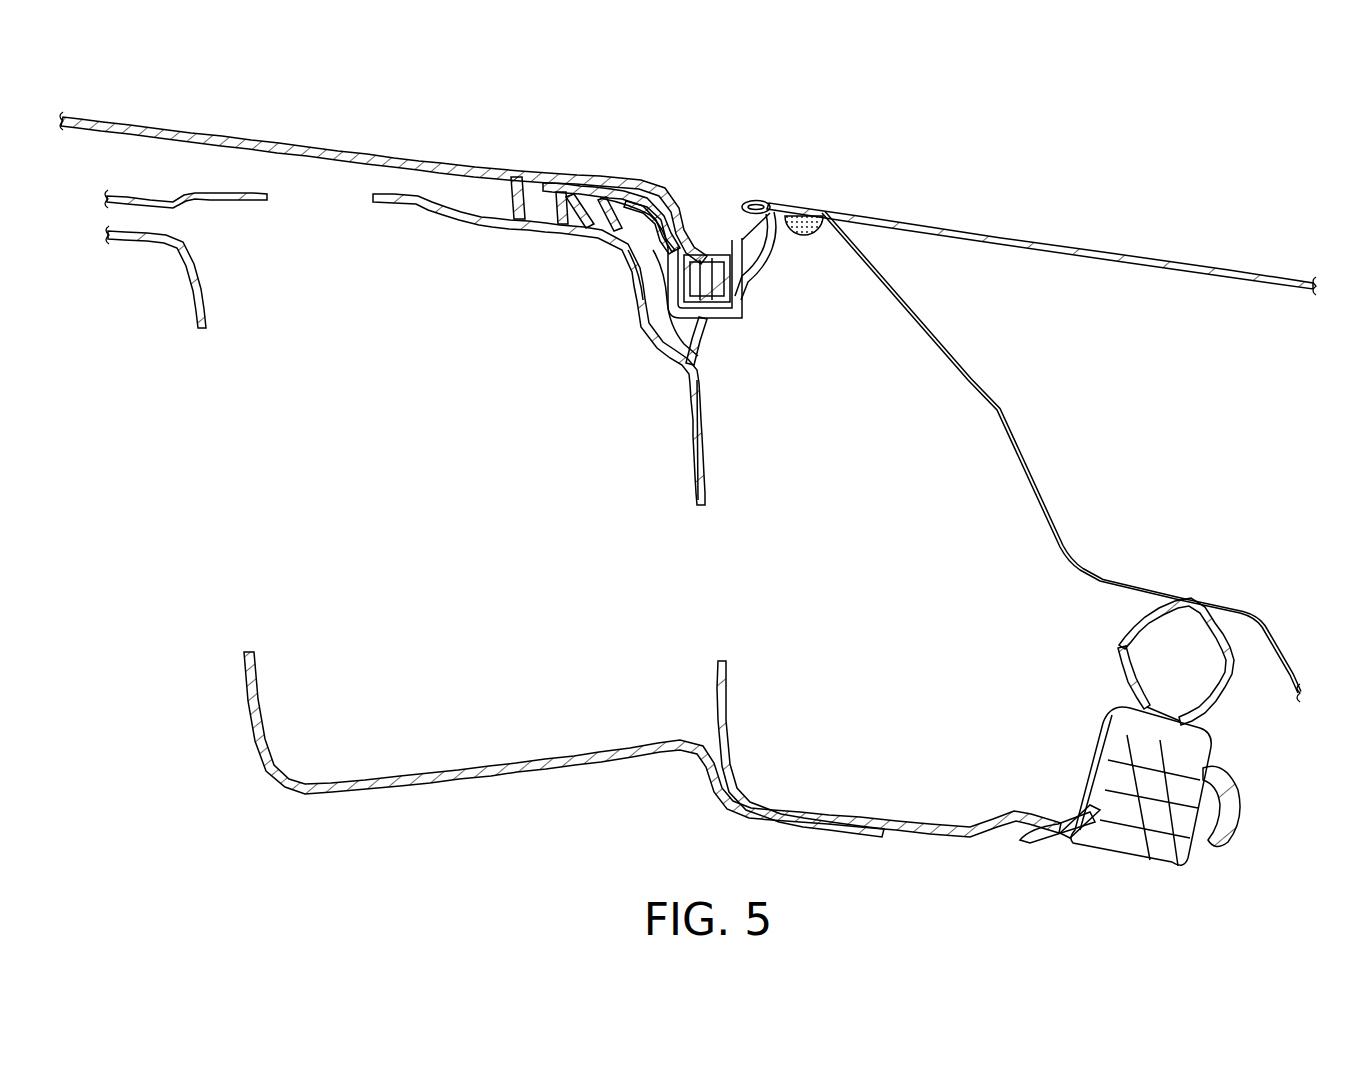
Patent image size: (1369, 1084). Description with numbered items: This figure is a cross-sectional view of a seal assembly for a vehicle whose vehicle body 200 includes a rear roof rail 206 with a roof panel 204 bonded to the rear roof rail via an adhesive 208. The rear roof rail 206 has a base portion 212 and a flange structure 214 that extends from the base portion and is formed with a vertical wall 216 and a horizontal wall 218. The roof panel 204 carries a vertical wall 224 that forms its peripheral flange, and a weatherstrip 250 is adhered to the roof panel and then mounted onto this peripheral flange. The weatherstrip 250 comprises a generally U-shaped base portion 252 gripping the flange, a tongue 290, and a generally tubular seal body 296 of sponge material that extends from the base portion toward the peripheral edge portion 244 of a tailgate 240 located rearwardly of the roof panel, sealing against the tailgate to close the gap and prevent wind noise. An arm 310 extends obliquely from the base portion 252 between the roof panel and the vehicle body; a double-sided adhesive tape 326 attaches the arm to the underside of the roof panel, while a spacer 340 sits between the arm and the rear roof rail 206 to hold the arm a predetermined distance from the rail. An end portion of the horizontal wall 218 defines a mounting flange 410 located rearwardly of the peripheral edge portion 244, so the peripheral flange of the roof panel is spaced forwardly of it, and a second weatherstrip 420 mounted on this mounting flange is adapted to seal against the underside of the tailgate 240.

The vehicle body 200 is at (585, 285).
The vehicle roof panel 204 is at (417, 153).
The rear roof rail 206 is at (647, 340).
The adhesive 208 is at (516, 220).
The base portion 212 is at (486, 231).
The flange structure 214 is at (666, 483).
The vertical wall 216 is at (706, 474).
The horizontal wall 218 is at (865, 812).
The vertical wall 224 is at (700, 245).
The tailgate 240 is at (1042, 240).
The peripheral edge portion 244 is at (748, 200).
The weatherstrip 250 is at (773, 271).
The base portion 252 is at (667, 291).
The tongue 290 is at (710, 358).
The seal body 296 is at (779, 250).
The arm 310 is at (637, 194).
The double-sided adhesive tape 326 is at (609, 184).
The spacer 340 is at (598, 219).
The mounting flange 410 is at (1117, 783).
The second weatherstrip 420 is at (1087, 688).